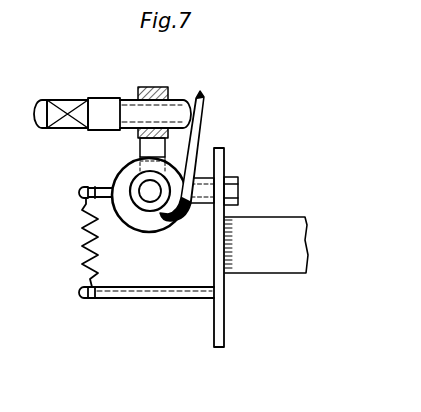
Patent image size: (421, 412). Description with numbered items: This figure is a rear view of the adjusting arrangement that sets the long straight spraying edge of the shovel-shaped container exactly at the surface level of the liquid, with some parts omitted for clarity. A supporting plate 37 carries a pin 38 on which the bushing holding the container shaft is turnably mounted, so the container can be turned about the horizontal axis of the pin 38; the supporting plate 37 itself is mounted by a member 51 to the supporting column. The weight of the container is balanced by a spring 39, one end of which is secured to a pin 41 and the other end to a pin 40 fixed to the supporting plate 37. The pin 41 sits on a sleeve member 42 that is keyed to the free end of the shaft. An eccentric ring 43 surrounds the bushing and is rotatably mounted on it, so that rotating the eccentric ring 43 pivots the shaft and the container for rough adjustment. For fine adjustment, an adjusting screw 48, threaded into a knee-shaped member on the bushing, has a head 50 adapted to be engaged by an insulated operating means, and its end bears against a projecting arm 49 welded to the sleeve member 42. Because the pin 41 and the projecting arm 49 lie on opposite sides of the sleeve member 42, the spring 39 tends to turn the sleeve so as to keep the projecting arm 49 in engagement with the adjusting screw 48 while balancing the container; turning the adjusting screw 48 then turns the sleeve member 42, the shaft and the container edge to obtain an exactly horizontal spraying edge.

The supporting plate 37 is at (220, 348).
The pin 38 is at (202, 207).
The spring 39 is at (83, 261).
The pin 40 is at (127, 295).
The pin 41 is at (84, 187).
The sleeve member 42 is at (155, 210).
The eccentric ring 43 is at (133, 222).
The adjusting screw 48 is at (102, 110).
The projecting arm 49 is at (199, 108).
The head 50 is at (63, 108).
The member 51 is at (278, 218).